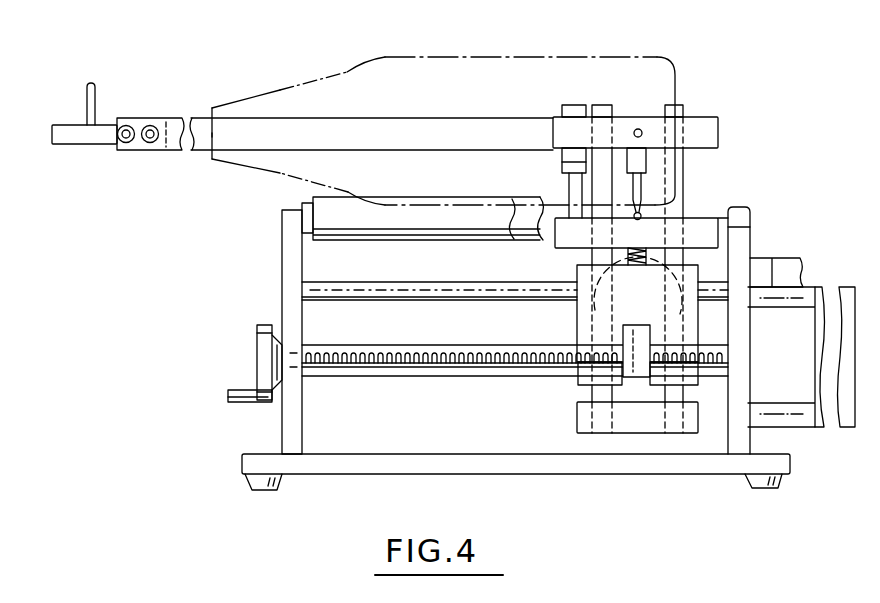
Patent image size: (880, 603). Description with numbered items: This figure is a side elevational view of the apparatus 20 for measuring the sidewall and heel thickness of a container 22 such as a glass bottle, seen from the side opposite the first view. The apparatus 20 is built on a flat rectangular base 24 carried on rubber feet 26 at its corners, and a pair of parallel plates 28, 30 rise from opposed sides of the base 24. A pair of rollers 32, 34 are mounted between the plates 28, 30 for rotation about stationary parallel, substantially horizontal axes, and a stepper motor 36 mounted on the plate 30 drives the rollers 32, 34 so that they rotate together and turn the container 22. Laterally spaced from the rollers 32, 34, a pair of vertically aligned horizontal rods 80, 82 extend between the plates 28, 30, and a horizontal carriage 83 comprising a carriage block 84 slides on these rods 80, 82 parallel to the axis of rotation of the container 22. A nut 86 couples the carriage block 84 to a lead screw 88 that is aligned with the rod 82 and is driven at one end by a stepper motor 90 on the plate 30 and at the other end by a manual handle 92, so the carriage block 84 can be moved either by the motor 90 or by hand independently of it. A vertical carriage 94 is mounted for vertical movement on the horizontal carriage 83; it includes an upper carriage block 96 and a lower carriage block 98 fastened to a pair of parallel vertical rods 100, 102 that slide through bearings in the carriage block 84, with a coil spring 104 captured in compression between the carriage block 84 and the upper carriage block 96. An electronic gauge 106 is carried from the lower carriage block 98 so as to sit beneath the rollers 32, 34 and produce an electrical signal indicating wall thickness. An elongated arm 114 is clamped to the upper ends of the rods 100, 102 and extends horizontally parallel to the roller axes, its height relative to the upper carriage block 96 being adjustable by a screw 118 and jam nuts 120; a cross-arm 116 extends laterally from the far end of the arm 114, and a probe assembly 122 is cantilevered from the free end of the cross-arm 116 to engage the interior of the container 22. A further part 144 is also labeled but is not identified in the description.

The apparatus 20 is at (180, 353).
The container 22 is at (500, 56).
The base 24 is at (420, 458).
The rubber feet 26 is at (265, 483).
The plate 28 is at (288, 248).
The plate 30 is at (750, 237).
The roller 32 is at (392, 200).
The roller 34 is at (540, 212).
The stepper motor 36 is at (795, 258).
The rod 80 is at (361, 292).
The rod 82 is at (382, 338).
The horizontal carriage 83 is at (568, 322).
The carriage block 84 is at (580, 384).
The nut 86 is at (620, 356).
The lead screw 88 is at (407, 363).
The stepper motor 90 is at (843, 425).
The manual handle 92 is at (243, 399).
The vertical carriage 94 is at (731, 204).
The upper carriage block 96 is at (697, 218).
The lower carriage block 98 is at (583, 434).
The vertical rod 100 is at (682, 163).
The vertical rod 102 is at (598, 106).
The coil spring 104 is at (626, 258).
The electronic gauge 106 is at (577, 292).
The elongated arm 114 is at (702, 125).
The cross-arm 116 is at (160, 152).
The screw 118 is at (571, 105).
The jam nuts 120 is at (566, 163).
The probe assembly 122 is at (95, 153).
The pin 144 is at (88, 82).